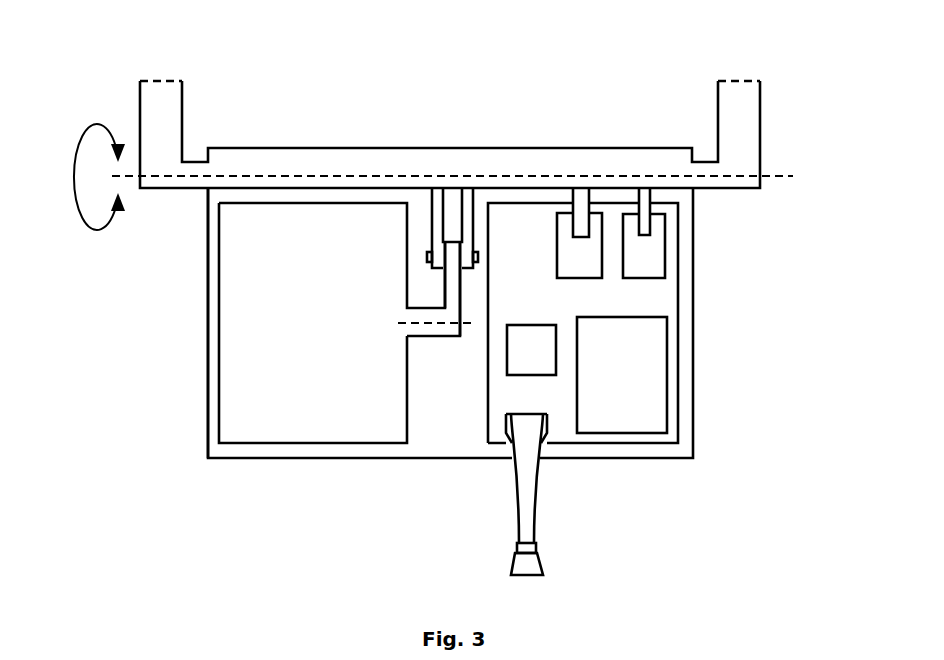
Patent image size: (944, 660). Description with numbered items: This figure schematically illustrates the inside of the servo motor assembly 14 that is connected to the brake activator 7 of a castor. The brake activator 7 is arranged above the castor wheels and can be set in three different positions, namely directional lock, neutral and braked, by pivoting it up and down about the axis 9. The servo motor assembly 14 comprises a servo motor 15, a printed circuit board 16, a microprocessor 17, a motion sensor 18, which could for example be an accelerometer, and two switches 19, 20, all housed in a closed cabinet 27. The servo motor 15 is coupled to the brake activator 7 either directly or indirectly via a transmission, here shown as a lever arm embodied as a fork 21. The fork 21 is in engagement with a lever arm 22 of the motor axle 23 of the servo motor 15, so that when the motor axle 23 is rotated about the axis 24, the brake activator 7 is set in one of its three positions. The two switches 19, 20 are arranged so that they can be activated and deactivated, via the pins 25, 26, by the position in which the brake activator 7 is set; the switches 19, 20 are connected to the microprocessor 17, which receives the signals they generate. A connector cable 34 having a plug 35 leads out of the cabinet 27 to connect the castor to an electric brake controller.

The brake activator 7 is at (745, 110).
The axis 9 is at (775, 172).
The servo motor assembly 14 is at (150, 330).
The servo motor 15 is at (241, 384).
The printed circuit board 16 is at (673, 392).
The microprocessor 17 is at (616, 422).
The motion sensor 18 is at (545, 366).
The first switch 19 is at (582, 273).
The second switch 20 is at (657, 241).
The fork 21 is at (470, 197).
The lever arm 22 is at (440, 286).
The motor axle 23 is at (419, 330).
The axis 24 is at (440, 325).
The first pin 25 is at (580, 203).
The second pin 26 is at (642, 203).
The closed cabinet 27 is at (208, 277).
The connector cable 34 is at (527, 510).
The plug 35 is at (522, 563).